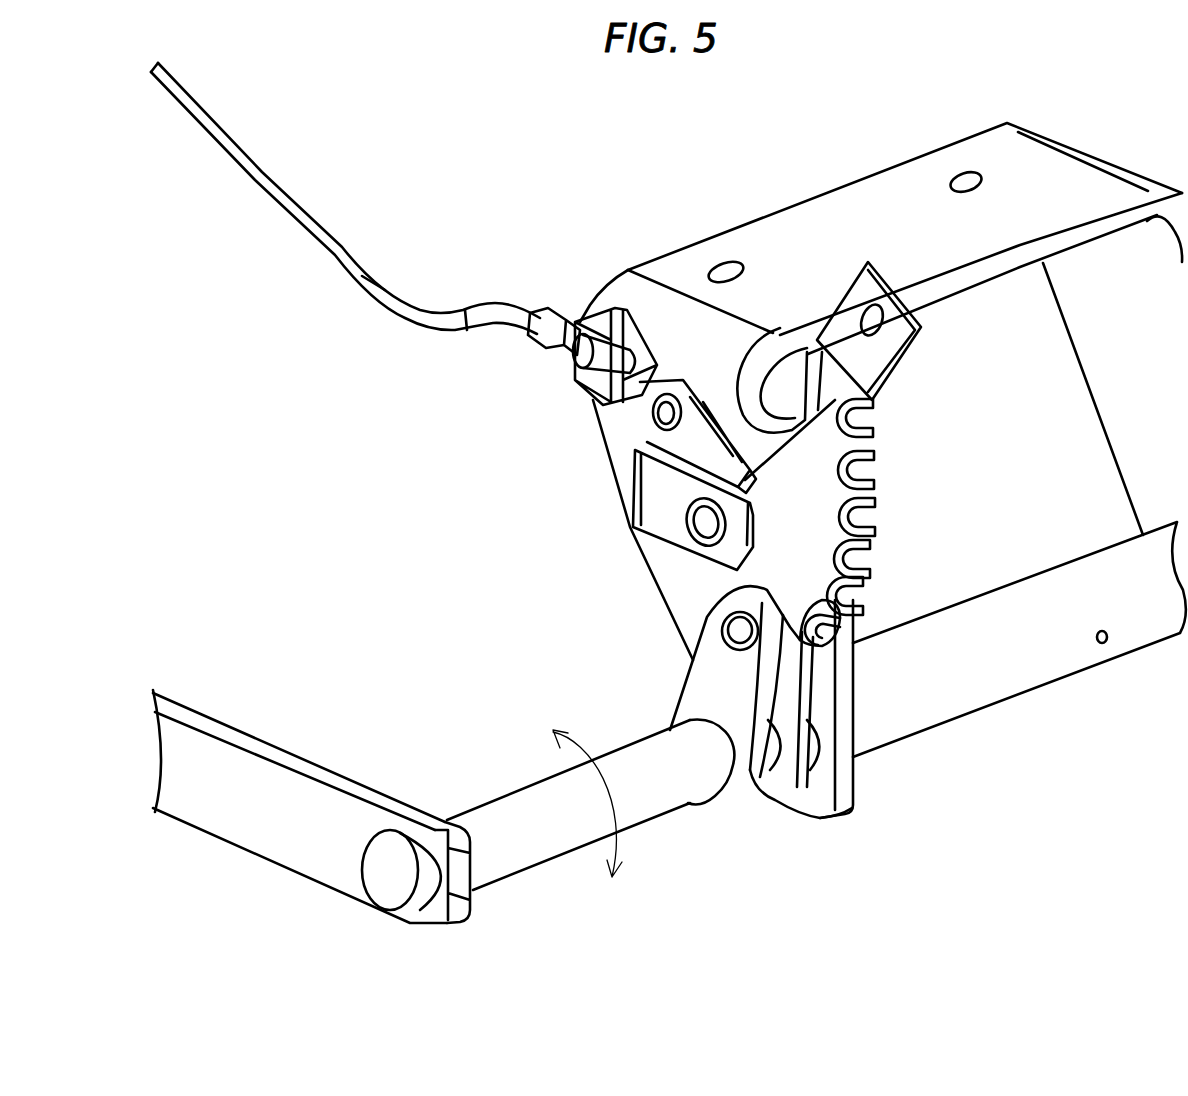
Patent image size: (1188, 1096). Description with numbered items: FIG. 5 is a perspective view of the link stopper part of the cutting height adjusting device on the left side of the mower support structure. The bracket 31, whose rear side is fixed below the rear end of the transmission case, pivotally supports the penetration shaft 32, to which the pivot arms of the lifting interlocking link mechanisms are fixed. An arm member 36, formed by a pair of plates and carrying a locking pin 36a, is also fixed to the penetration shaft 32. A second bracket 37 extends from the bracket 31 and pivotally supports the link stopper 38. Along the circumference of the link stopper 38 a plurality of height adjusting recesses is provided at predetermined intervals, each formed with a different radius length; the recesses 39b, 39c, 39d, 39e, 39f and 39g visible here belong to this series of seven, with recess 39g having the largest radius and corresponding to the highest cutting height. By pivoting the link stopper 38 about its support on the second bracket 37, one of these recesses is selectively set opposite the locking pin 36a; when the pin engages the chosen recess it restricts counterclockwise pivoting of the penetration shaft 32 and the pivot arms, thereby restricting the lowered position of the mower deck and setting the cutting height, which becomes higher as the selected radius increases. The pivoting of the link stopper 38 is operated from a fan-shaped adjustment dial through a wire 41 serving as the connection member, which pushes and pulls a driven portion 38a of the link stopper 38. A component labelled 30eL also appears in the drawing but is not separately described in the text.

The bracket 31 is at (860, 174).
The wire 41 is at (315, 223).
The driven portion 38a is at (680, 440).
The second bracket 37 is at (663, 515).
The arm member 36 is at (706, 748).
The locking pin 36a is at (718, 633).
The penetration shaft 32 is at (528, 853).
The left pedal arm 30eL is at (210, 817).
The link stopper 38 is at (896, 545).
The height adjusting recess 39b is at (830, 640).
The height adjusting recess 39c is at (855, 595).
The height adjusting recess 39d is at (852, 560).
The height adjusting recess 39e is at (865, 510).
The height adjusting recess 39f is at (872, 470).
The height adjusting recess 39g is at (858, 422).